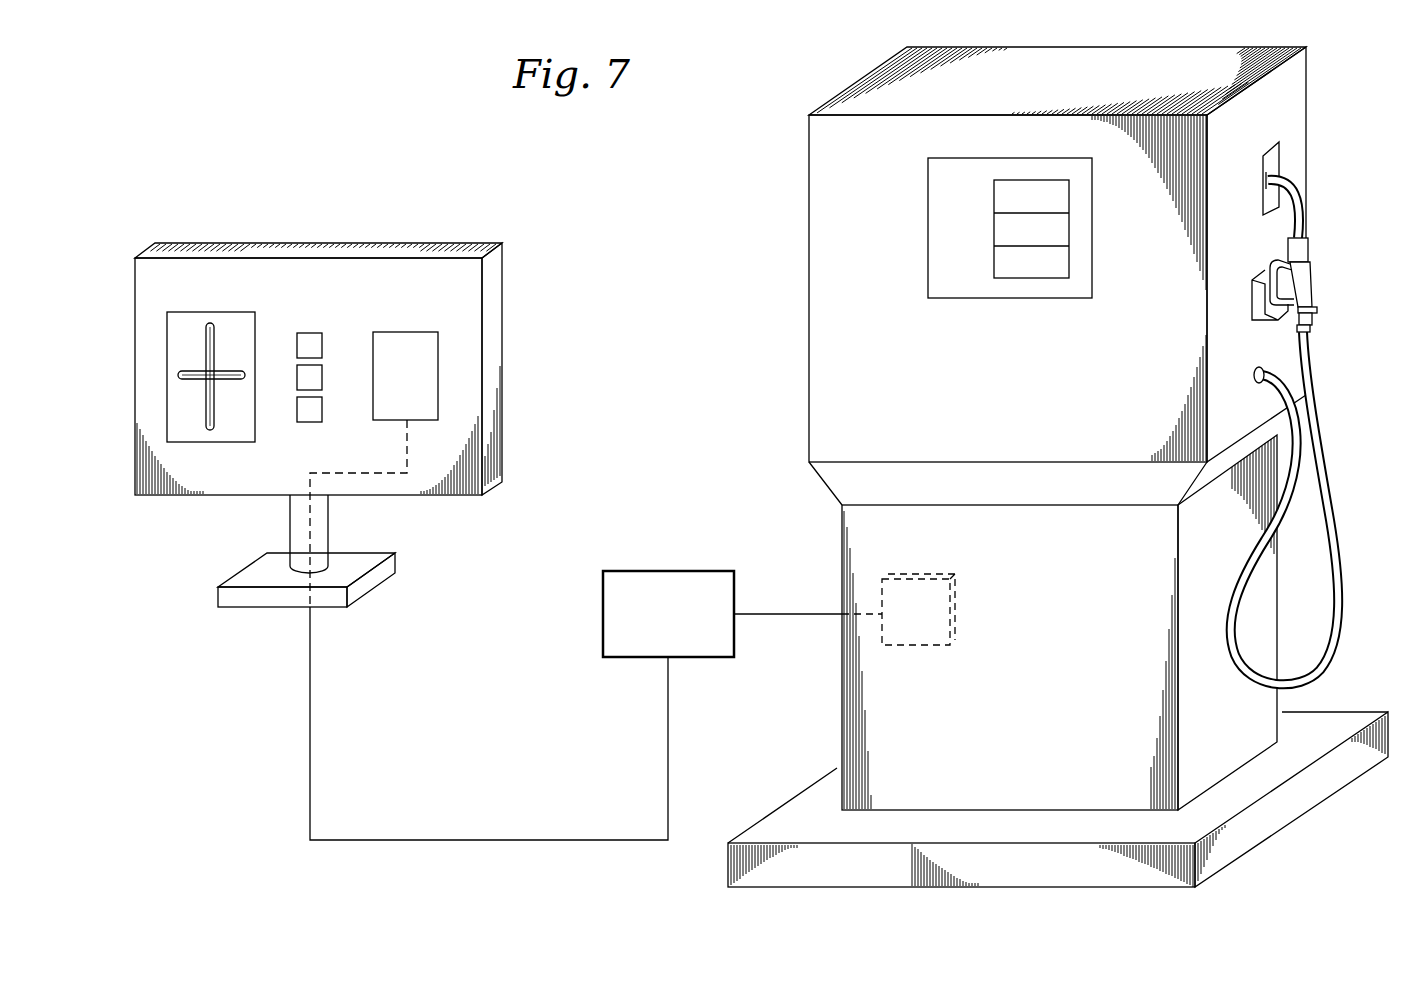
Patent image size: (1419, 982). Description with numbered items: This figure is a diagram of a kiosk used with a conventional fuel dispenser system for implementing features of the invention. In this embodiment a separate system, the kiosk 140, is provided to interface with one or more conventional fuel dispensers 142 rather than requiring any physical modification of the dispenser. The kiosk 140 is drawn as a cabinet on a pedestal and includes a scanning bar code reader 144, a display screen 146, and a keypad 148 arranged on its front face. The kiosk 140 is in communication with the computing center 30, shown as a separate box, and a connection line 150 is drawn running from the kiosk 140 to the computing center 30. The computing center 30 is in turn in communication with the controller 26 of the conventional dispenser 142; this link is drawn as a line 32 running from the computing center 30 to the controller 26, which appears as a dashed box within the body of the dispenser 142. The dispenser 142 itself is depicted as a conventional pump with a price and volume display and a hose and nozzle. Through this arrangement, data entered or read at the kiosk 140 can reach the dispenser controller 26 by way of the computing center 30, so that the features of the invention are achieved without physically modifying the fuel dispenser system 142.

The controller 26 is at (952, 620).
The computing center 30 is at (647, 570).
The communication line 32 is at (780, 612).
The kiosk 140 is at (252, 201).
The conventional fuel dispenser 142 is at (1331, 89).
The scanning bar code reader 144 is at (188, 318).
The display screen 146 is at (423, 332).
The keypad 148 is at (289, 438).
The communication line 150 is at (472, 838).